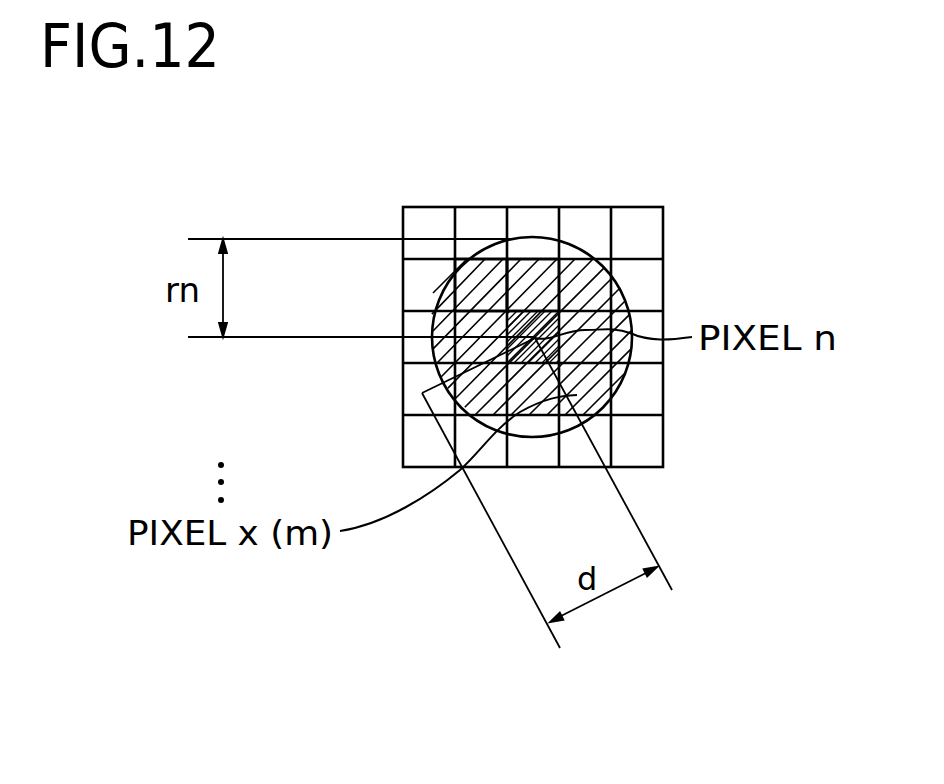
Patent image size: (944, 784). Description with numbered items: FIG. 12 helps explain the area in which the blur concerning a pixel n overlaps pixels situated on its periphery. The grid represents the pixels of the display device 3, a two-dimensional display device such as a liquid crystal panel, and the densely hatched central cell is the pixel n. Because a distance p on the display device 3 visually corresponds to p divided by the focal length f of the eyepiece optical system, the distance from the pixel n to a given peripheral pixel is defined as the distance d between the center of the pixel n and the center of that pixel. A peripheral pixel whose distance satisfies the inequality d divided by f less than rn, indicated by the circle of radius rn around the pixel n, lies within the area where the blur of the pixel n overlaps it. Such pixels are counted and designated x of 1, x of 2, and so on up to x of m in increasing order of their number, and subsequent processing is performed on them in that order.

The display device 3 is at (637, 235).
The pixel x(1) neighboring pixel 1 is at (469, 291).
The pixel x(2) neighboring pixel 2 is at (513, 294).